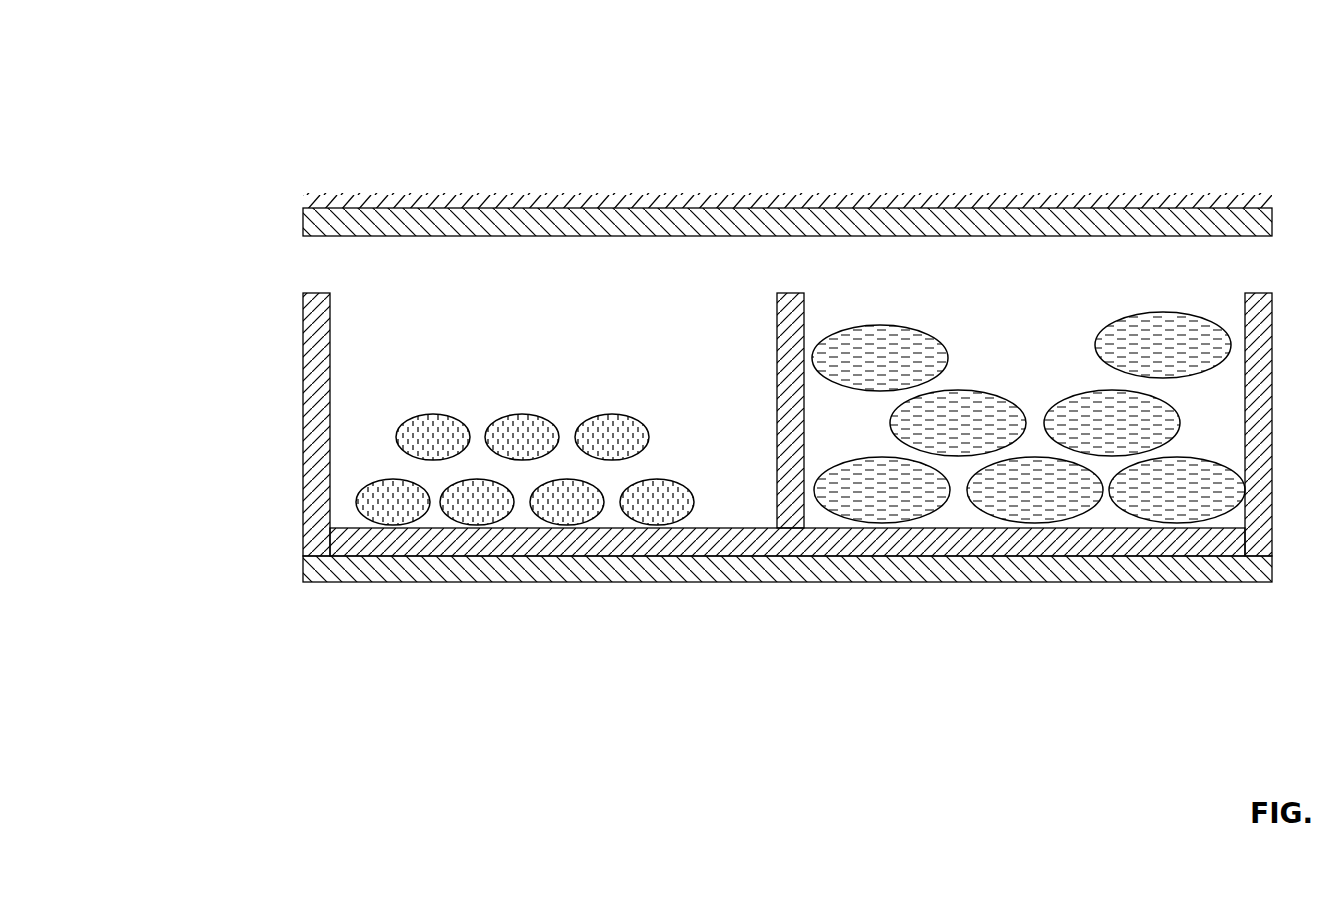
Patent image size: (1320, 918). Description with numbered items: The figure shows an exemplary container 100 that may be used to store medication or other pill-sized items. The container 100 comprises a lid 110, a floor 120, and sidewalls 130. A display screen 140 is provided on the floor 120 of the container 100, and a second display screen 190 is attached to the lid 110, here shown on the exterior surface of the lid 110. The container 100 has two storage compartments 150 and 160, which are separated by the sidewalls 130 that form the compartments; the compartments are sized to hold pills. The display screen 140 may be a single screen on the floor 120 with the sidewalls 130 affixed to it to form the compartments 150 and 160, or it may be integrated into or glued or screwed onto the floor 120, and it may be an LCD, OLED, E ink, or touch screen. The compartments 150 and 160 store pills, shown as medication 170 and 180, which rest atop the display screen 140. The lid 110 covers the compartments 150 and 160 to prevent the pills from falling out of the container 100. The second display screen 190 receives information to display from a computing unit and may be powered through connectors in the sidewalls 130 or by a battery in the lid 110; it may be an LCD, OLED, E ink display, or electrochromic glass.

The container 100 is at (245, 805).
The lid 110 is at (1041, 207).
The floor 120 is at (582, 581).
The sidewalls 130 is at (1244, 298).
The display screen 140 is at (1019, 544).
The storage compartment 150 is at (530, 380).
The storage compartment 160 is at (1039, 360).
The medication 170 is at (355, 512).
The medication 180 is at (882, 504).
The second display screen 190 is at (790, 187).